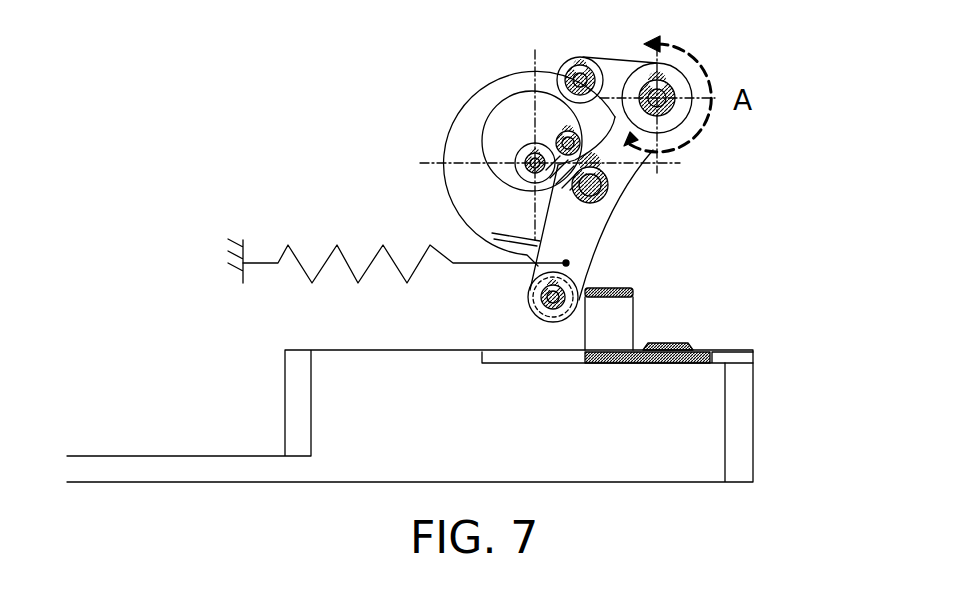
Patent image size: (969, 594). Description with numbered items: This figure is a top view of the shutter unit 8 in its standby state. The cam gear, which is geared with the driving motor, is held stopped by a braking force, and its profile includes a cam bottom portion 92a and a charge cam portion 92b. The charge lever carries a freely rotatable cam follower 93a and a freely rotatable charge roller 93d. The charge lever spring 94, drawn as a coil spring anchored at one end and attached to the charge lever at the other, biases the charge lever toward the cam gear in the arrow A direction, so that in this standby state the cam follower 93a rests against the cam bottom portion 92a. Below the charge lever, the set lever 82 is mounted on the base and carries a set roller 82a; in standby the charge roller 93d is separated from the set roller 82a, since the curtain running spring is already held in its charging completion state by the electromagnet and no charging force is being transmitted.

The shutter unit 8 is at (337, 422).
The set lever 82 is at (693, 353).
The set roller 82a is at (607, 313).
The cam bottom portion 92a is at (547, 160).
The charge cam portion 92b is at (480, 150).
The cam follower 93a is at (517, 176).
The charge roller 93d is at (533, 316).
The charge lever spring 94 is at (398, 280).